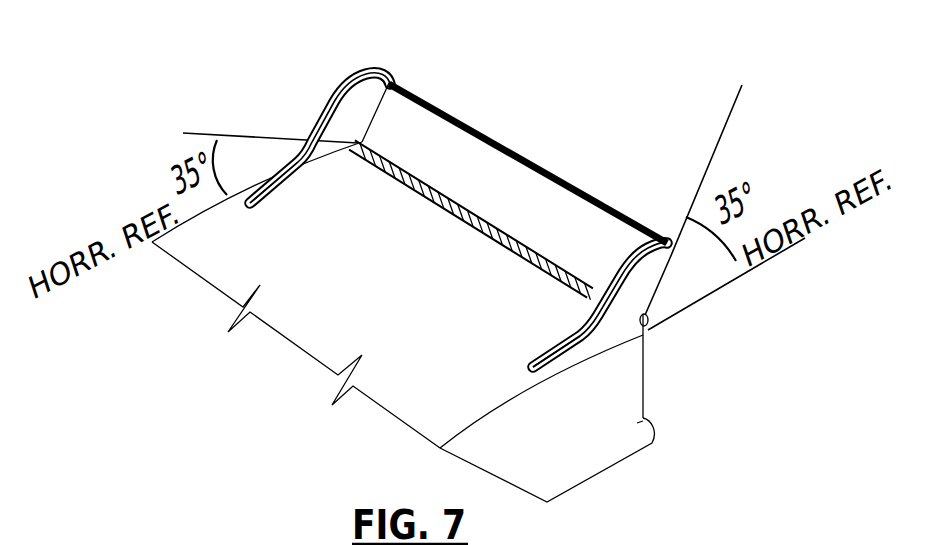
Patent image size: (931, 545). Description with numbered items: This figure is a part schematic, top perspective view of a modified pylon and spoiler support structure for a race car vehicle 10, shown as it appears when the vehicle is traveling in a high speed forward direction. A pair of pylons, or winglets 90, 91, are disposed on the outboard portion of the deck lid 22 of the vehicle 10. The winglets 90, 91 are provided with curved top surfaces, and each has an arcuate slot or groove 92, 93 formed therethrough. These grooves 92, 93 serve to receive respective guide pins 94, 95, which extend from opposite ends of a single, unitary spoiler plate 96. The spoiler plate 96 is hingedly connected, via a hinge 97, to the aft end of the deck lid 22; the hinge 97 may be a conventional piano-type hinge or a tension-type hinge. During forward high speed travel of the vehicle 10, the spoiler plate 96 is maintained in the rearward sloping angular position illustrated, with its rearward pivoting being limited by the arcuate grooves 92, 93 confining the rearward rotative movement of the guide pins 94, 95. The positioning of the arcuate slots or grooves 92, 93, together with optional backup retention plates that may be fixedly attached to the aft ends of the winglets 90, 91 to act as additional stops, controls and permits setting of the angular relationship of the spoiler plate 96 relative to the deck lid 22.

The vehicle 10 is at (645, 420).
The deck lid 22 is at (296, 295).
The winglet 90 is at (316, 159).
The winglet 91 is at (567, 337).
The arcuate slot or groove 92 is at (341, 91).
The arcuate slot or groove 93 is at (627, 302).
The guide pin 94 is at (392, 84).
The guide pin 95 is at (668, 250).
The spoiler plate 96 is at (557, 189).
The hinge 97 is at (515, 255).